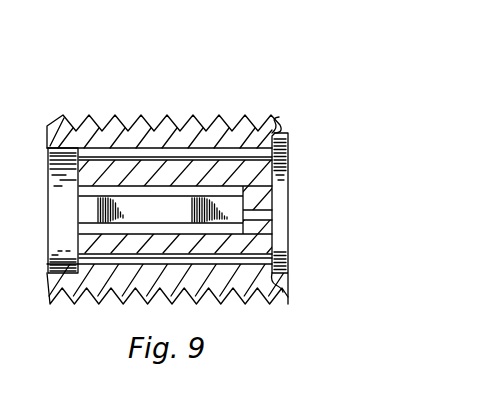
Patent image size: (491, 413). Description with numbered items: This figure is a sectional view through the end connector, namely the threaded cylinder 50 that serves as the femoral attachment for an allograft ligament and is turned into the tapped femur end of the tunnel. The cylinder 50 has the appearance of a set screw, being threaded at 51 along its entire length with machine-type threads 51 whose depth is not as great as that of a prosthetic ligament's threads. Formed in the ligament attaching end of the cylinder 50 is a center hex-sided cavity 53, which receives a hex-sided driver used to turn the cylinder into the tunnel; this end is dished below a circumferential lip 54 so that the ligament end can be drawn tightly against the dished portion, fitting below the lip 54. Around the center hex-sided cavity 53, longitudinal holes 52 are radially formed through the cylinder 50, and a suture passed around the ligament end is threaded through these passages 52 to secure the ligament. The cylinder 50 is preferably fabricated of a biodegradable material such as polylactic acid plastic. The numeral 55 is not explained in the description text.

The threaded cylinder 50 is at (181, 94).
The threads 51 is at (200, 113).
The longitudinal holes 52 is at (281, 127).
The center hex-sided cavity 53 is at (80, 218).
The circumferential lip 54 is at (53, 258).
The right end cap 55 is at (283, 195).